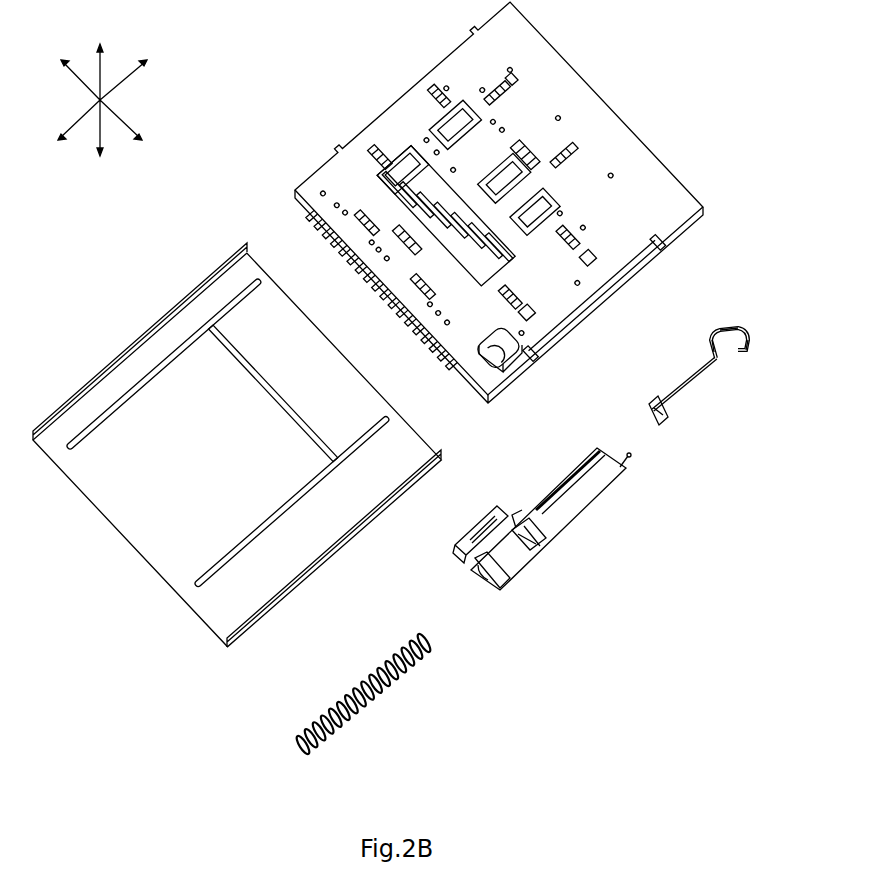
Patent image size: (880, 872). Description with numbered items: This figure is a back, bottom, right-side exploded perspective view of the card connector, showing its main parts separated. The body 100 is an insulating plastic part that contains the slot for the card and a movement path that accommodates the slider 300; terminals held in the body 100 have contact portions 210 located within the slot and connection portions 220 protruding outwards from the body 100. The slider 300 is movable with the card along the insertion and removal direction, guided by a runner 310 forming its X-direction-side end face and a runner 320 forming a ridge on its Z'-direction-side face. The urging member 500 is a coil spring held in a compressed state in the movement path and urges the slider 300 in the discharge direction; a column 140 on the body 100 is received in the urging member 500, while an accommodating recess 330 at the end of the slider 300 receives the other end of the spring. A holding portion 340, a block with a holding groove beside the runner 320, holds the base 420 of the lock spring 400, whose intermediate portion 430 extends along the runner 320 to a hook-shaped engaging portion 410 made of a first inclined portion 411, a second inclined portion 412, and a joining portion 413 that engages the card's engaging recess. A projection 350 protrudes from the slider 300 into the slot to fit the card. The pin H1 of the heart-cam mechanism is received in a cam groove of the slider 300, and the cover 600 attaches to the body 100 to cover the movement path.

The body 100 is at (684, 200).
The contact portion 210 is at (386, 84).
The connection portion 220 is at (312, 216).
The column 140 is at (499, 363).
The cover 600 is at (162, 513).
The slider 300 is at (553, 527).
The runner 310 is at (586, 506).
The runner 320 is at (571, 478).
The accommodating recess 330 is at (491, 580).
The holding portion 340 is at (546, 542).
The projection 350 is at (490, 520).
The pin H1 is at (623, 468).
The lock spring 400 is at (702, 365).
The engaging portion 410 is at (713, 329).
The first inclined portion 411 is at (749, 349).
The second inclined portion 412 is at (710, 343).
The joining portion 413 is at (718, 330).
The base 420 is at (660, 426).
The intermediate portion 430 is at (690, 380).
The urging member 500 is at (386, 690).